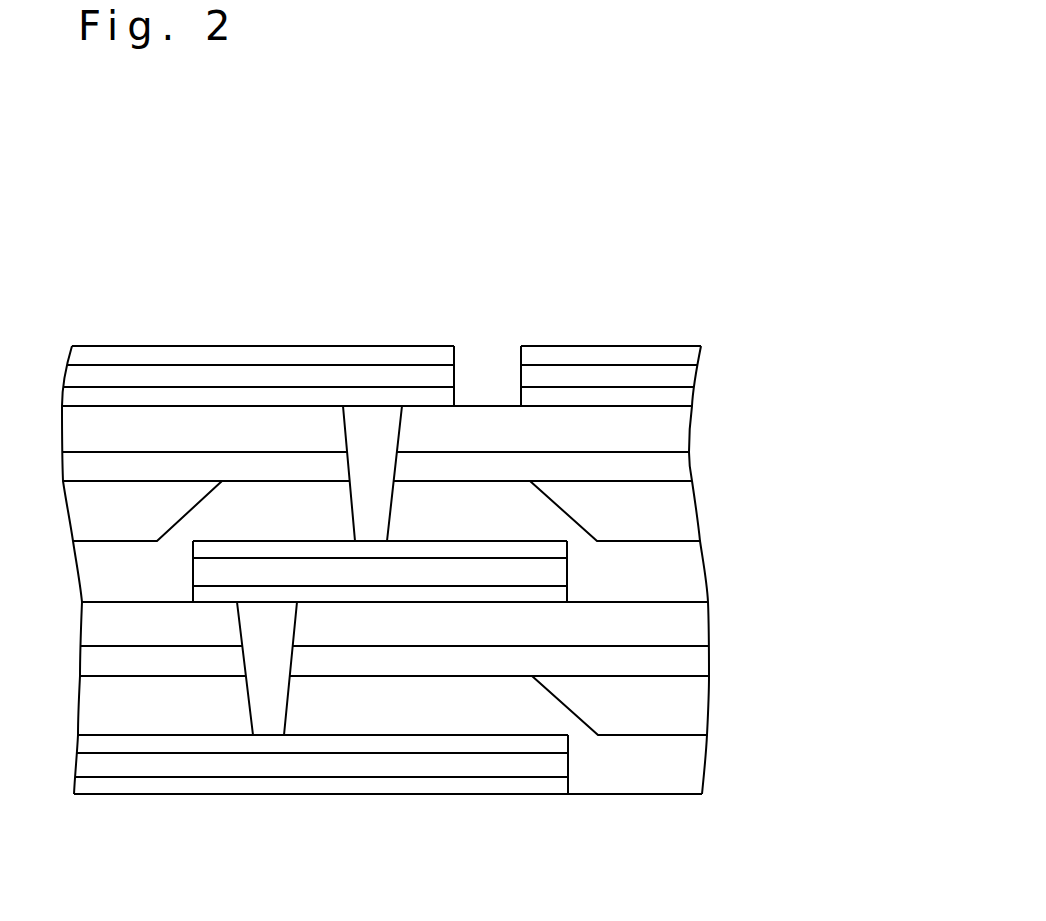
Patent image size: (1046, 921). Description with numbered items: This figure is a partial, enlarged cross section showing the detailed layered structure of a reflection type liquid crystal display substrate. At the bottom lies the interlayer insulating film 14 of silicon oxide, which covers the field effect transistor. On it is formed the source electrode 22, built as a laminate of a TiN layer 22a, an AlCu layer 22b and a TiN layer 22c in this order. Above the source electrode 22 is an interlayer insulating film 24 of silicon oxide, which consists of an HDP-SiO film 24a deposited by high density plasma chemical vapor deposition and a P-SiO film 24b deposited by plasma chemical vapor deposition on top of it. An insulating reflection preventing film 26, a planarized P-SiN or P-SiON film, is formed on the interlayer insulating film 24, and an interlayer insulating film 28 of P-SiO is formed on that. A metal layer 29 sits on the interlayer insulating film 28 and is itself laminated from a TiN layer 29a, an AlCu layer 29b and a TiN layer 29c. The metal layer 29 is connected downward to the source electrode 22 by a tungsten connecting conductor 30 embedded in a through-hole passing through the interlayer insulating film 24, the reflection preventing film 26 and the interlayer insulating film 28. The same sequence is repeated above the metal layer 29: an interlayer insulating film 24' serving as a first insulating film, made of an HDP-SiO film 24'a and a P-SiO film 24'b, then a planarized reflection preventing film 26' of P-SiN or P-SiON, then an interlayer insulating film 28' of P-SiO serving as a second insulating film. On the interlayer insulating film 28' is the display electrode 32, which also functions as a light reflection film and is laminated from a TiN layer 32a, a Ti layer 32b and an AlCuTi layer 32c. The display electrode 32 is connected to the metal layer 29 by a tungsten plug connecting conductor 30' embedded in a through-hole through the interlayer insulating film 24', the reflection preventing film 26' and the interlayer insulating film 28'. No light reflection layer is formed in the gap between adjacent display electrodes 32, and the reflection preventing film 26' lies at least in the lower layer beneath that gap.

The interlayer insulating film 14 is at (658, 843).
The source electrode 22 is at (321, 811).
The TiN layer 22a is at (365, 848).
The AlCu layer 22b is at (422, 762).
The TiN layer 22c is at (373, 745).
The interlayer insulating film 24 is at (495, 735).
The HDP-SiO film 24a is at (696, 763).
The P-SiO film 24b is at (702, 706).
The interlayer insulating film 24' is at (491, 541).
The HDP-SiO film 24'a is at (454, 571).
The P-SiO film 24'b is at (449, 511).
The reflection preventing film 26 is at (453, 664).
The reflection preventing film 26' is at (445, 462).
The interlayer insulating film 28 is at (451, 624).
The interlayer insulating film 28' is at (438, 428).
The metal layer 29 is at (380, 508).
The TiN layer 29a is at (410, 503).
The AlCu layer 29b is at (460, 568).
The TiN layer 29c is at (417, 553).
The connecting conductor 30 is at (328, 668).
The connecting conductor 30' is at (321, 473).
The display electrode 32 is at (481, 348).
The TiN layer 32a is at (690, 395).
The Ti layer 32b is at (697, 377).
The AlCuTi layer 32c is at (703, 356).